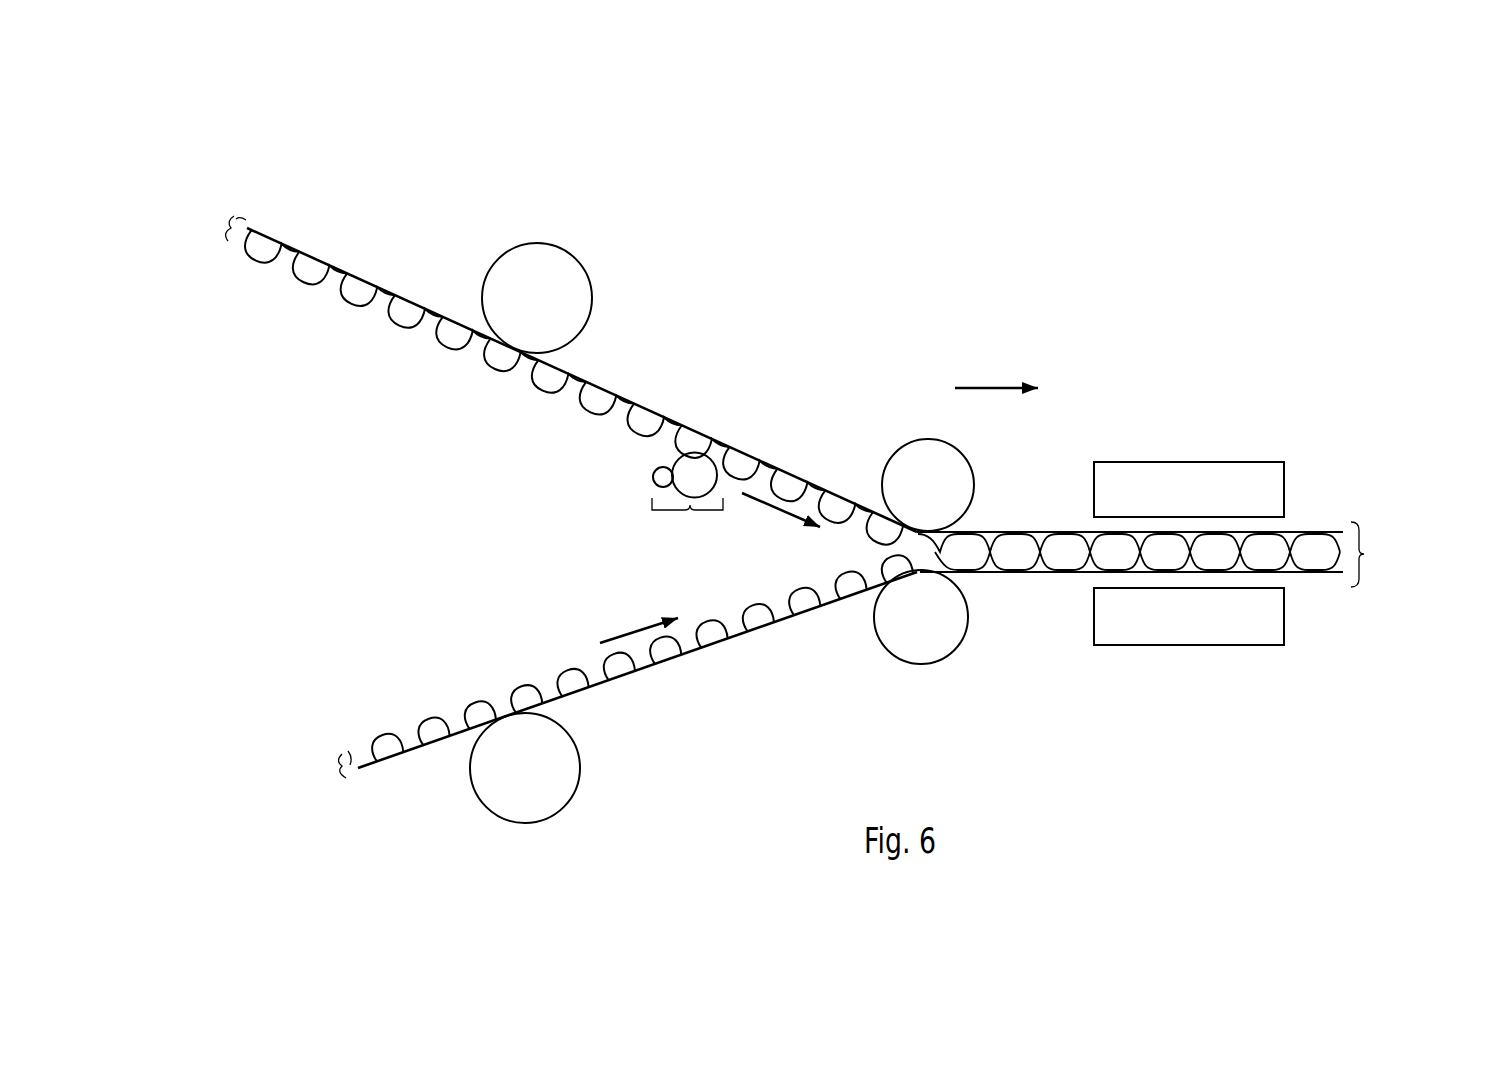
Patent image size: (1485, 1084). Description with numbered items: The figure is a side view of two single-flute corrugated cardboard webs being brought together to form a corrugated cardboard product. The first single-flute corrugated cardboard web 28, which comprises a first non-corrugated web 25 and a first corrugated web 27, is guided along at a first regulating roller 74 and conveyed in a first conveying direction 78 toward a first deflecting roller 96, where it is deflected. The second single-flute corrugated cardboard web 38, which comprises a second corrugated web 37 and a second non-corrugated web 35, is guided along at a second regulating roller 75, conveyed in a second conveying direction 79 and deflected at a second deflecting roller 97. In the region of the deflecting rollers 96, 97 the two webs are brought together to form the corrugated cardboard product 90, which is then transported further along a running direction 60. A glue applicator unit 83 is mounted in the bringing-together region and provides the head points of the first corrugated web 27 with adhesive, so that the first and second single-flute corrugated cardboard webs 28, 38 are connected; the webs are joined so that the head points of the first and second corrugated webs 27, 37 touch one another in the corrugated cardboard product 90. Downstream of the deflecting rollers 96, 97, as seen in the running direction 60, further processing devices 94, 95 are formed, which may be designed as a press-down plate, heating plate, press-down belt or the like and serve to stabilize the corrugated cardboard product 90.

The first non-corrugated web 25 is at (313, 258).
The first corrugated web 27 is at (300, 278).
The first single-flute corrugated cardboard web 28 is at (224, 224).
The second non-corrugated web 35 is at (393, 757).
The second corrugated web 37 is at (388, 735).
The second single-flute corrugated cardboard web 38 is at (330, 770).
The running direction 60 is at (988, 385).
The first regulating roller 74 is at (548, 306).
The second regulating roller 75 is at (537, 781).
The first conveying direction 78 is at (773, 510).
The second conveying direction 79 is at (633, 630).
The glue applicator unit 83 is at (690, 508).
The corrugated cardboard product 90 is at (1364, 554).
The processing device 94 is at (1200, 501).
The processing device 95 is at (1200, 631).
The first deflecting roller 96 is at (941, 496).
The second deflecting roller 97 is at (934, 631).